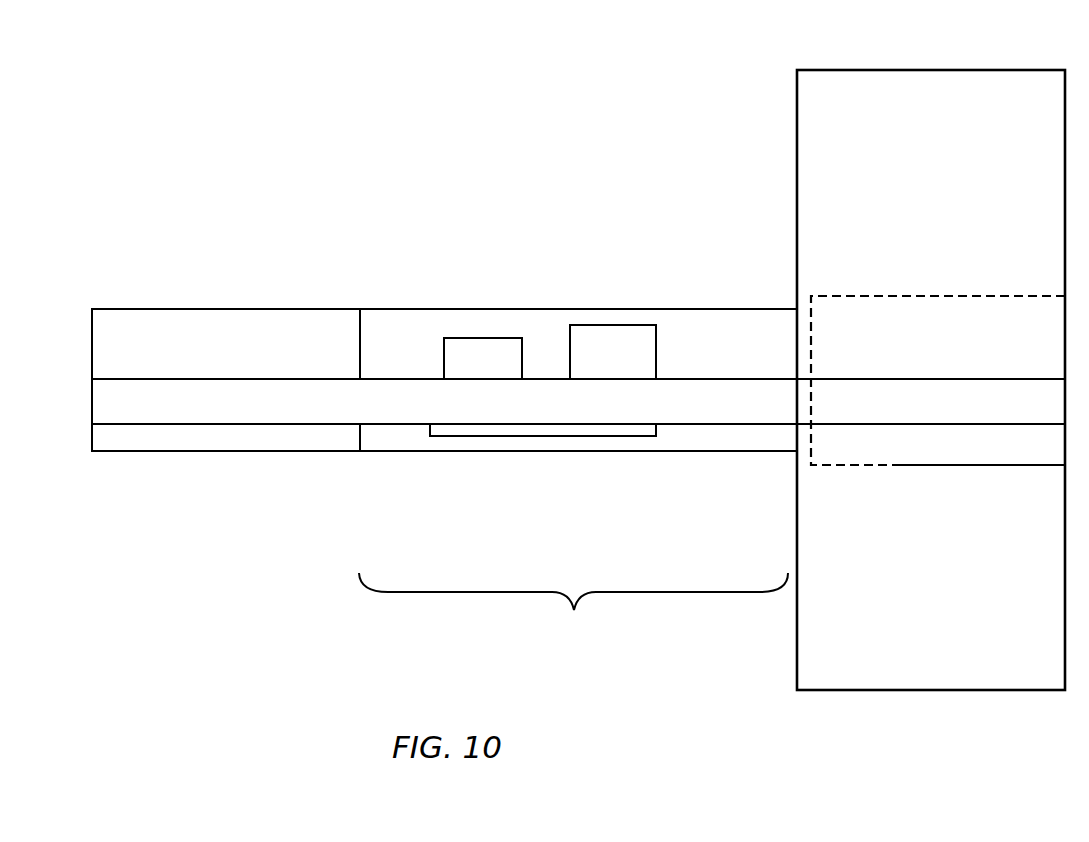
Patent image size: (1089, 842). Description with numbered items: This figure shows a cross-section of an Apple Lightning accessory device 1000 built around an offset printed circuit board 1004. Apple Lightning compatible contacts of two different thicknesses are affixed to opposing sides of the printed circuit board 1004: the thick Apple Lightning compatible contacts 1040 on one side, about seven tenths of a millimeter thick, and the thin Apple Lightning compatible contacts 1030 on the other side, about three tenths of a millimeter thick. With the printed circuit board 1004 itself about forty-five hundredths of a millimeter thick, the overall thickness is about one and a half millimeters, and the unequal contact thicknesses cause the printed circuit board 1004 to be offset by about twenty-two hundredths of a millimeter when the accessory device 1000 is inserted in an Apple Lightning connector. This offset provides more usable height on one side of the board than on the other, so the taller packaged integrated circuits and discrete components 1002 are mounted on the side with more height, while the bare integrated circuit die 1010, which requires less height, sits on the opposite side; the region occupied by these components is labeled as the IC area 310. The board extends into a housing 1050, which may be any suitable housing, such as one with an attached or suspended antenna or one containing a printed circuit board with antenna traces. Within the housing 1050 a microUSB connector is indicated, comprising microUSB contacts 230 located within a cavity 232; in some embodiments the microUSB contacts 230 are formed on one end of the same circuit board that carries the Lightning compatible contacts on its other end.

The accessory device 1000 is at (699, 120).
The Apple Lightning compatible contacts 1040 is at (235, 322).
The Apple Lightning compatible contacts 1030 is at (202, 437).
The offset printed circuit board 1004 is at (578, 401).
The packaged integrated circuits and discrete components 1002 is at (587, 340).
The bare integrated circuit die 1010 is at (576, 437).
The IC area 310 is at (573, 607).
The housing 1050 is at (931, 380).
The microUSB contacts 230 is at (999, 380).
The cavity 232 is at (979, 466).